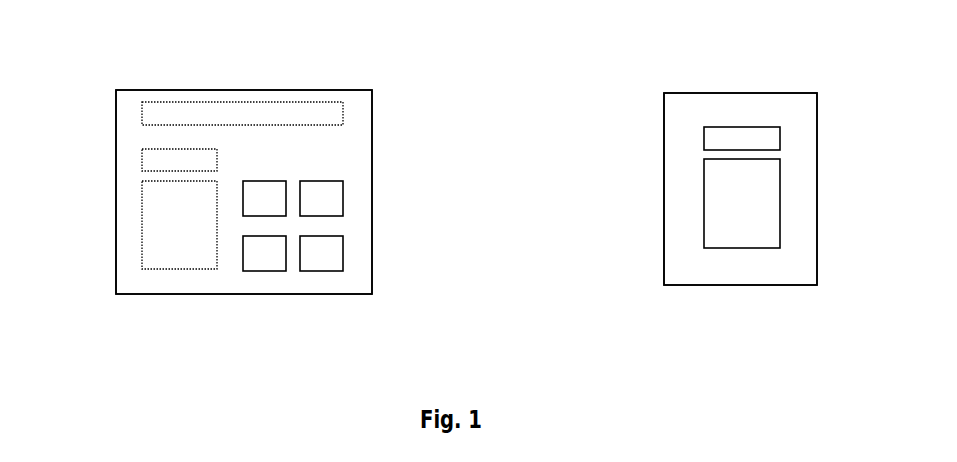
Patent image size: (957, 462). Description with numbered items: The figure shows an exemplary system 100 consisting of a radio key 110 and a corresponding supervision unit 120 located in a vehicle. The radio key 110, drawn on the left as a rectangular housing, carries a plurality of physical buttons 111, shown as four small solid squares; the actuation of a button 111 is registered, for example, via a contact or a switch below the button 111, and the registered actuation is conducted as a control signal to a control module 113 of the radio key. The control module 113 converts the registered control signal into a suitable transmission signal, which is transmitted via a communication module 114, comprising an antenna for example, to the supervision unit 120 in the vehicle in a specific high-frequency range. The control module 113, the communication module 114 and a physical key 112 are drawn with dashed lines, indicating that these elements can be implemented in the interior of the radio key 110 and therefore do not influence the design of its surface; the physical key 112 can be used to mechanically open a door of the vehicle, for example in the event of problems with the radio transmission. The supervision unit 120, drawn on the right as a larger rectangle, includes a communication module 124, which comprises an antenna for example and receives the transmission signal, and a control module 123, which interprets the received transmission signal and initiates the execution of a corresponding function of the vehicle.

The system 100 is at (115, 58).
The radio key 110 is at (116, 180).
The physical buttons 111 is at (272, 194).
The physical key 112 is at (303, 115).
The control module 113 is at (142, 238).
The communication module 114 is at (158, 160).
The supervision unit 120 is at (664, 159).
The control module 123 is at (773, 205).
The communication module 124 is at (773, 138).